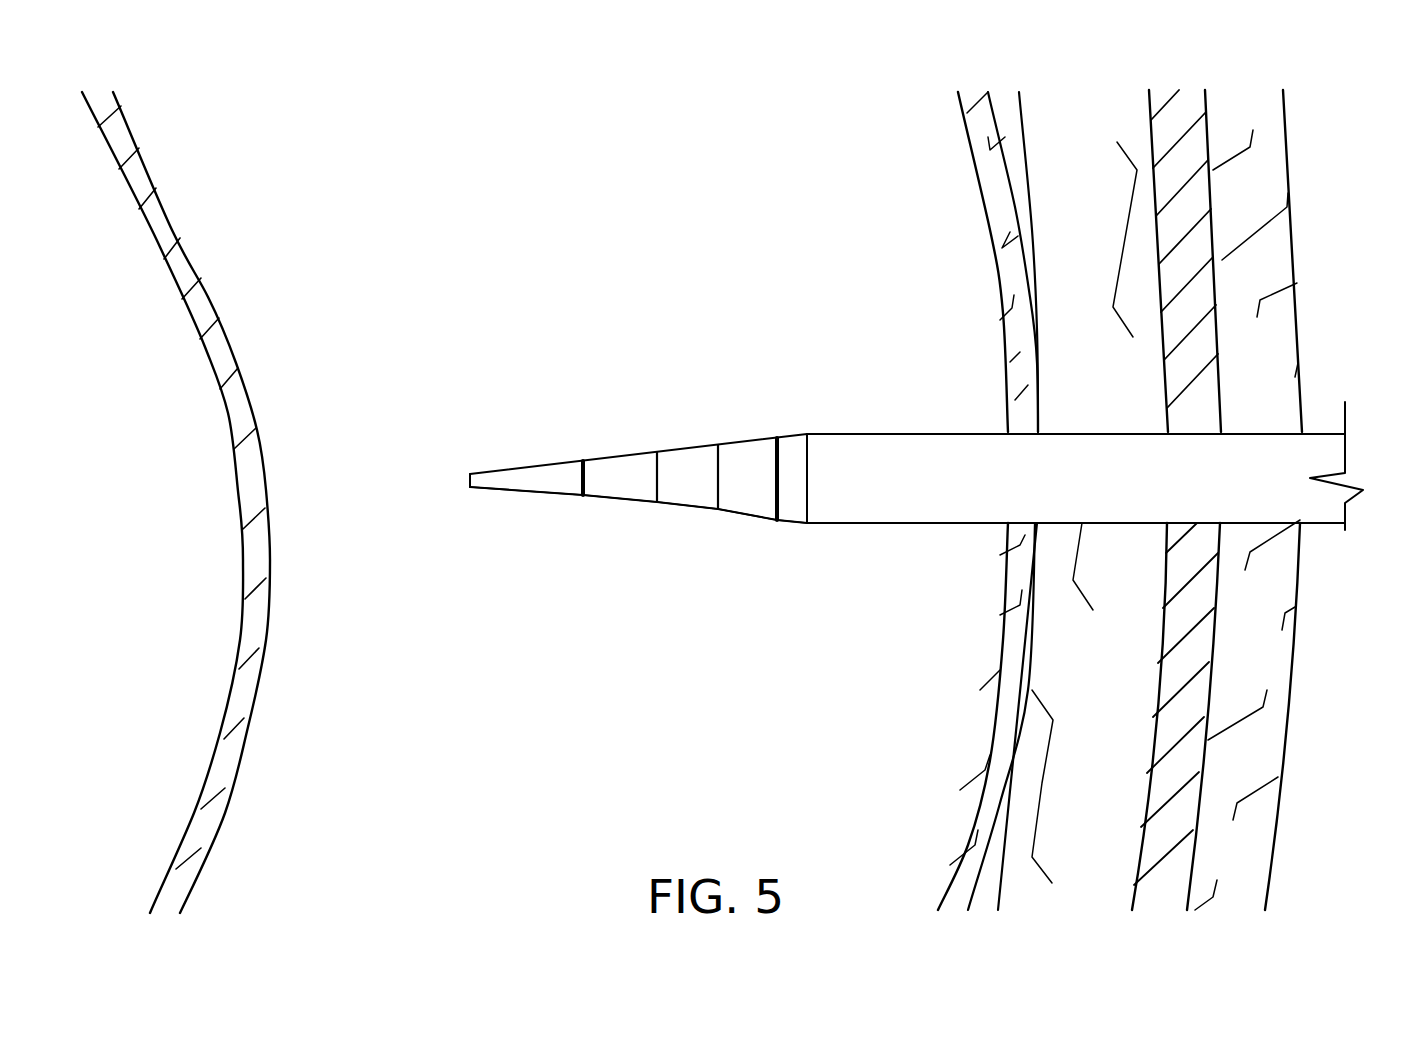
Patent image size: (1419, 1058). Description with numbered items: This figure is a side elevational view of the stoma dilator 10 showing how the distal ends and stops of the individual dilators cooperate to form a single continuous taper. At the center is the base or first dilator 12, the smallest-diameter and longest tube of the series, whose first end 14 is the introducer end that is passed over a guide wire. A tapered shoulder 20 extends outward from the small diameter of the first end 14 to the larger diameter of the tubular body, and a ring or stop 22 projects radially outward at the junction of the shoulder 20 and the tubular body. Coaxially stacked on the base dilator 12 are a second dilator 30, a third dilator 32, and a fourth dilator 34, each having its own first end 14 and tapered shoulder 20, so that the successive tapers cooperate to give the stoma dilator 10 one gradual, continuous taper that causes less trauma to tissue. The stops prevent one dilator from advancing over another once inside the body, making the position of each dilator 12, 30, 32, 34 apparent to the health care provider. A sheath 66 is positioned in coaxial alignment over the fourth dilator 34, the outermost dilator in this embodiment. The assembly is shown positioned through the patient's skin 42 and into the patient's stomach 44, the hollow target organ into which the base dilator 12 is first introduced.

The stoma dilator 10 is at (928, 290).
The base or first dilator 12 is at (533, 475).
The first end 14 is at (470, 476).
The tapered shoulder 20 is at (557, 485).
The ring or stop 22 is at (583, 463).
The second dilator 30 is at (619, 467).
The third dilator 32 is at (685, 457).
The fourth dilator 34 is at (753, 450).
The patient's skin 42 is at (1300, 260).
The patient's stomach 44 is at (213, 347).
The sheath 66 is at (787, 513).